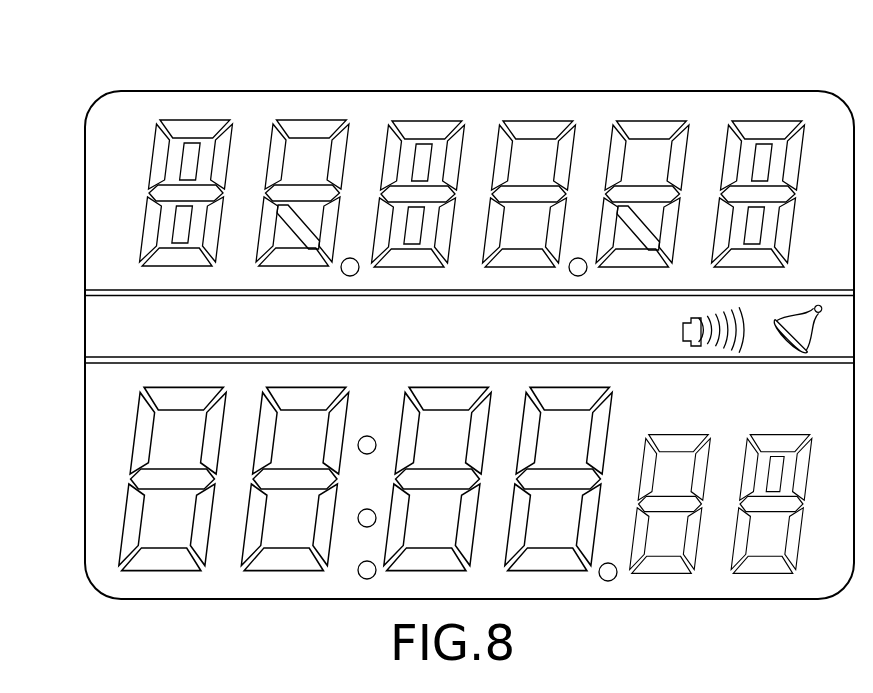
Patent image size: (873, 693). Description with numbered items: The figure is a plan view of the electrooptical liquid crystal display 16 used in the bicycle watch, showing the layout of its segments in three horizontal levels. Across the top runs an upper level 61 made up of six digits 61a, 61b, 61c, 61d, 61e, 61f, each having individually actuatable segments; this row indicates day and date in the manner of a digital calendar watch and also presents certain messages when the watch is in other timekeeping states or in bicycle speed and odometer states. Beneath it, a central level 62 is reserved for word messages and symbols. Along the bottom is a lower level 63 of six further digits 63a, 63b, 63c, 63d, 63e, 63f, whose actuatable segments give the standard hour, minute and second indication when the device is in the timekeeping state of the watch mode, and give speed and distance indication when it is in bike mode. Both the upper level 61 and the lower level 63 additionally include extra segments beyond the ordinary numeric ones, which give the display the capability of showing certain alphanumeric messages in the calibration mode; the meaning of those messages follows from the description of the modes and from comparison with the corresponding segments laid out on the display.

The display 16 is at (138, 66).
The upper level 61 is at (68, 123).
The digit 61a is at (209, 114).
The digit 61b is at (336, 114).
The digit 61c is at (448, 113).
The digit 61d is at (564, 113).
The digit 61e is at (683, 113).
The digit 61f is at (794, 113).
The central level 62 is at (66, 295).
The lower level 63 is at (68, 383).
The digit 63a is at (183, 578).
The digit 63b is at (302, 580).
The digit 63c is at (466, 579).
The digit 63d is at (571, 580).
The digit 63e is at (681, 581).
The digit 63f is at (772, 582).